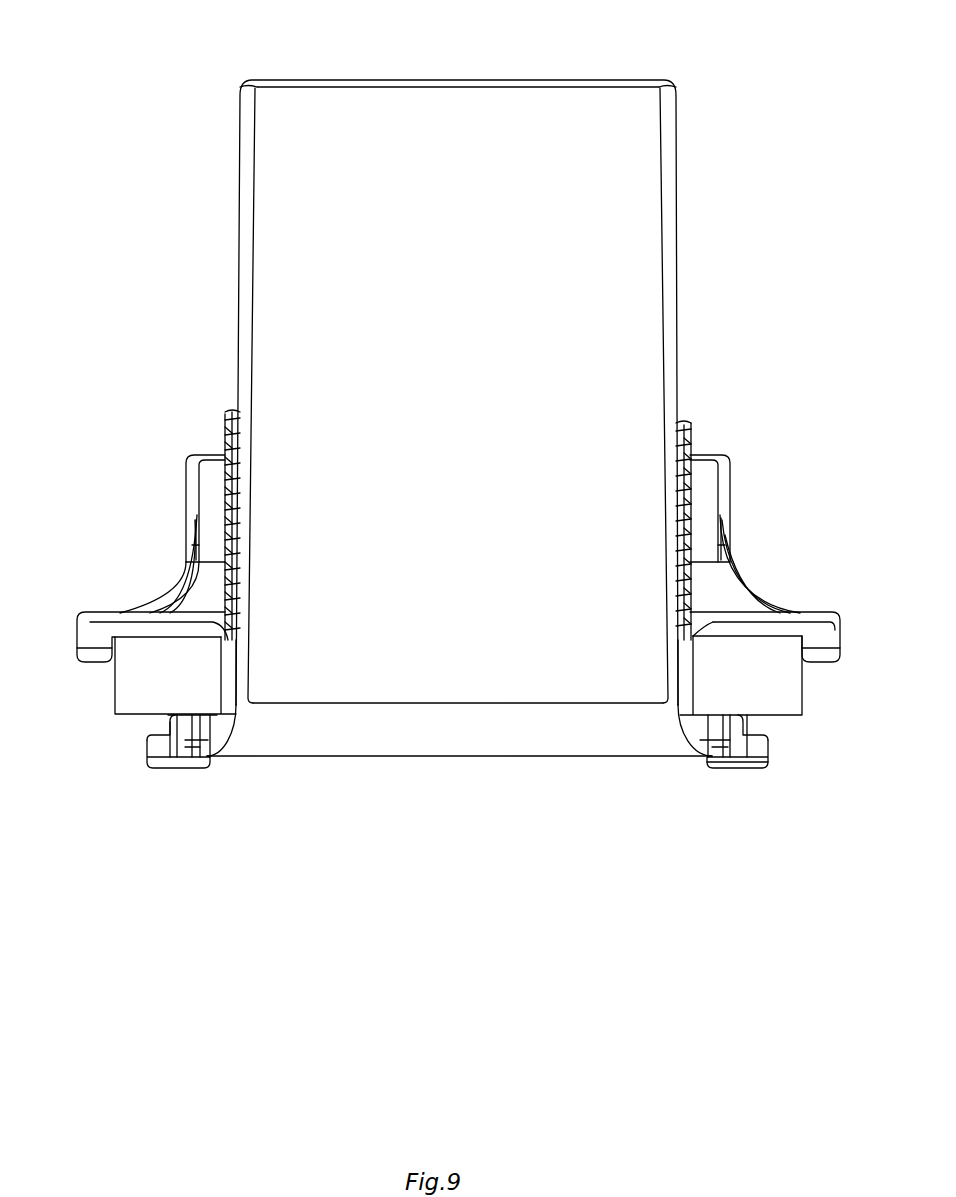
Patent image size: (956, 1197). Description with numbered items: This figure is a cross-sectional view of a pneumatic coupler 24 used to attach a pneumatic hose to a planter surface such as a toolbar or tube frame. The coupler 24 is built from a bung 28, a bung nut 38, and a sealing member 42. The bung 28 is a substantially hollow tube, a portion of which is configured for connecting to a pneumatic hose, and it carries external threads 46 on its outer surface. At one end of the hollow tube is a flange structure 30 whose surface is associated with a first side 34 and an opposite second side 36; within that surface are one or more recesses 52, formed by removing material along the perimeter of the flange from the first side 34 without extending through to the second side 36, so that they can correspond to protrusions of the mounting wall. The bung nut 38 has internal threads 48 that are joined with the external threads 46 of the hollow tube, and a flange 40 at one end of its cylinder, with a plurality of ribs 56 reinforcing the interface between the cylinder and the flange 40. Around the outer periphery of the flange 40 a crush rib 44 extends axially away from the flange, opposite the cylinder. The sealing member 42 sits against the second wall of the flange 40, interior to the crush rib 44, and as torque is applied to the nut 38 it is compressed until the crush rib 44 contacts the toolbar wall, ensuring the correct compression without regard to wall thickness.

The pneumatic coupler 24 is at (214, 34).
The bung 28 is at (668, 190).
The flange structure 30 is at (770, 738).
The first side 34 is at (722, 716).
The second side 36 is at (745, 770).
The bung nut 38 is at (190, 492).
The flange 40 is at (832, 612).
The sealing member 42 is at (115, 679).
The crush rib 44 is at (76, 634).
The external threads 46 is at (690, 443).
The internal threads 48 is at (692, 497).
The recesses 52 is at (158, 723).
The ribs 56 is at (752, 579).